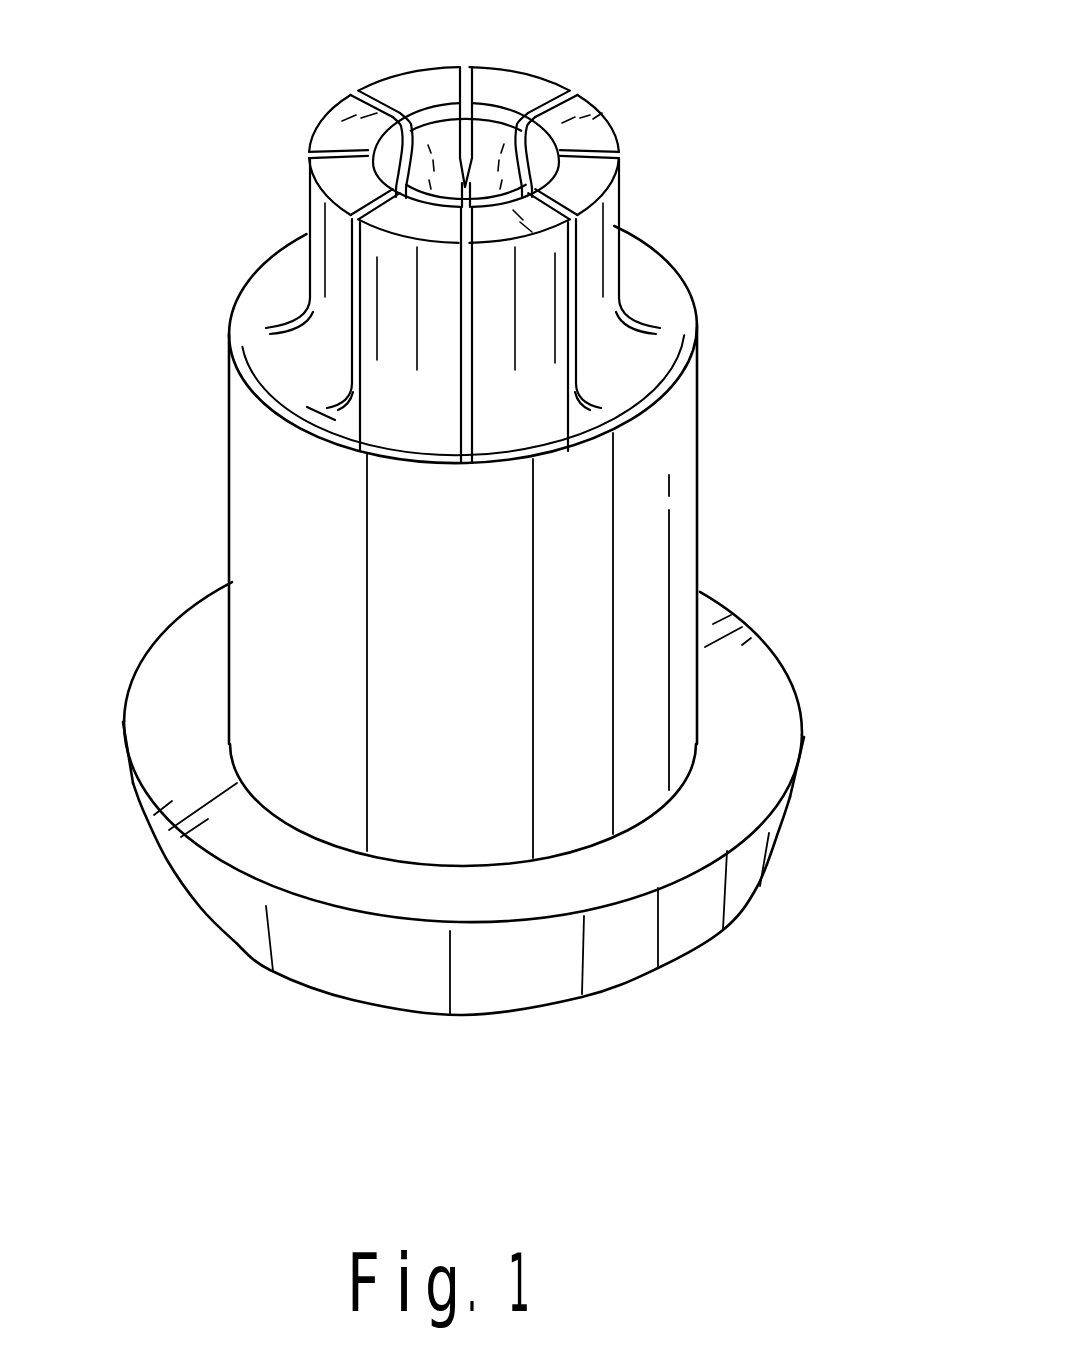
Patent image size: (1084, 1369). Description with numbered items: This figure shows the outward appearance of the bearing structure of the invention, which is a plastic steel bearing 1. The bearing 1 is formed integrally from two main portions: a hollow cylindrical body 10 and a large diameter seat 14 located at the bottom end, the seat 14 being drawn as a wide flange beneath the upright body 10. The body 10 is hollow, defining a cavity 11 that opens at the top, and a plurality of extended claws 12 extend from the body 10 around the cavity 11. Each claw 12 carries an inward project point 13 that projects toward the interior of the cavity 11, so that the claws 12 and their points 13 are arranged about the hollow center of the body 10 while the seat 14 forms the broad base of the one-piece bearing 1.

The plastic steel bearing 1 is at (737, 120).
The hollow cylindrical body 10 is at (678, 537).
The cavity 11 is at (465, 343).
The extended claws 12 is at (330, 117).
The inward project point 13 is at (480, 158).
The large diameter seat 14 is at (760, 725).